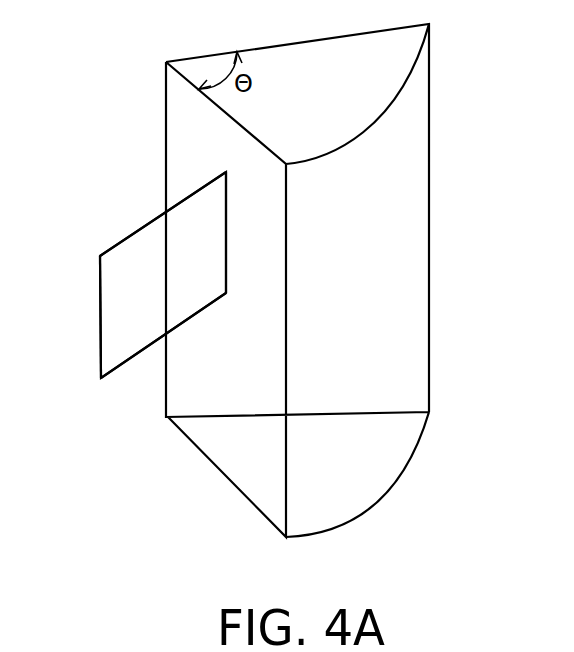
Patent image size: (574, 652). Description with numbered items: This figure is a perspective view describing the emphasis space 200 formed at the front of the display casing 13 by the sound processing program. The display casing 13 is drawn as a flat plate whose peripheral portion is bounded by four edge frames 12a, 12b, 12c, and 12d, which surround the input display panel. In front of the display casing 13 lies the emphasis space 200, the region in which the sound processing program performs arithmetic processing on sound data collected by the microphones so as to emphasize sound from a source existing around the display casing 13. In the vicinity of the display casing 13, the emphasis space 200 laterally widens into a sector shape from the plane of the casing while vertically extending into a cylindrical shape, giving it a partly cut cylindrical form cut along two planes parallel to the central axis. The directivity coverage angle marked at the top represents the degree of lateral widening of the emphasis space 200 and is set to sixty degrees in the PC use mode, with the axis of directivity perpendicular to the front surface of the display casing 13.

The emphasis space 200 is at (430, 230).
The display casing 13 is at (151, 250).
The edge frame 12a is at (152, 338).
The edge frame 12b is at (227, 252).
The edge frame 12c is at (125, 238).
The edge frame 12d is at (100, 340).